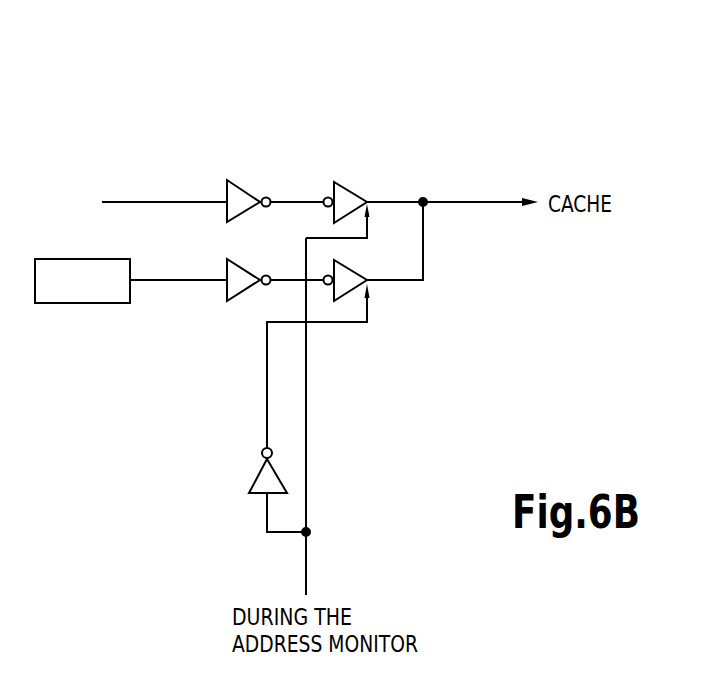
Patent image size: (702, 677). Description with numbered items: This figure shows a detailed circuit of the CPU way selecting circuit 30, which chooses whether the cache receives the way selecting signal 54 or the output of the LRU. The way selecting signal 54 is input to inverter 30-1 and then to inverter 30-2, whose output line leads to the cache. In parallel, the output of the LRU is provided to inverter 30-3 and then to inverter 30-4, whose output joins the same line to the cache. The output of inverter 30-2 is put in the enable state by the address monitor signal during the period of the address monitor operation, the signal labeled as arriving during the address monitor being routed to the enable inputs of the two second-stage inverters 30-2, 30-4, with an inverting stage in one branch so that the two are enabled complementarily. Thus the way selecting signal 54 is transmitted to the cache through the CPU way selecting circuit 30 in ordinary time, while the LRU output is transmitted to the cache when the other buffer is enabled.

The CPU way selecting circuit 30 is at (300, 117).
The inverter 30-1 is at (245, 183).
The inverter 30-2 is at (350, 182).
The inverter 30-3 is at (227, 291).
The inverter 30-4 is at (360, 291).
The way selecting signal 54 is at (146, 204).